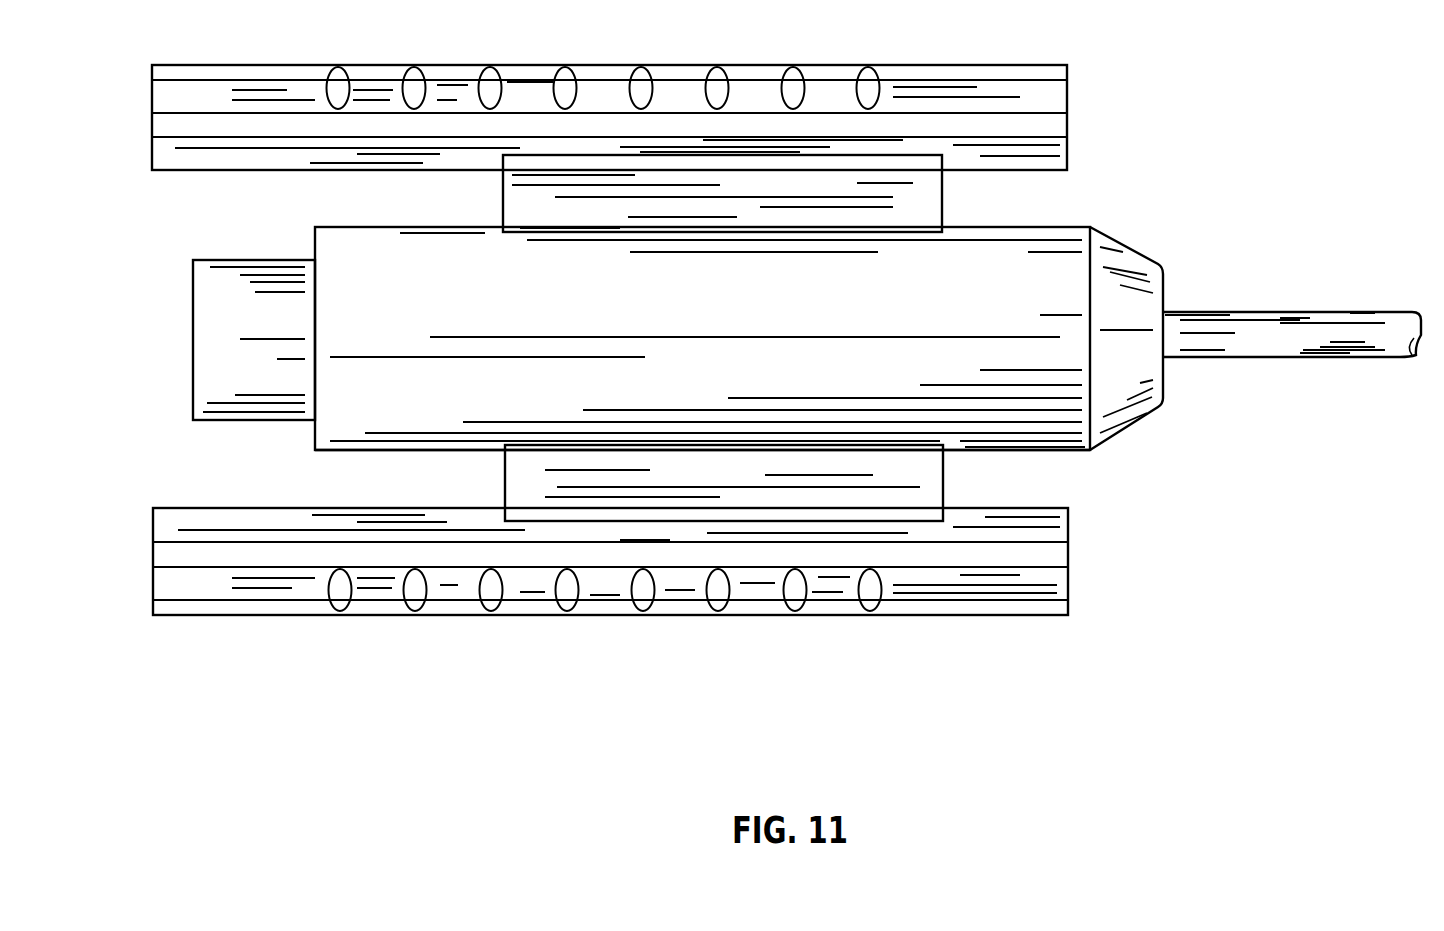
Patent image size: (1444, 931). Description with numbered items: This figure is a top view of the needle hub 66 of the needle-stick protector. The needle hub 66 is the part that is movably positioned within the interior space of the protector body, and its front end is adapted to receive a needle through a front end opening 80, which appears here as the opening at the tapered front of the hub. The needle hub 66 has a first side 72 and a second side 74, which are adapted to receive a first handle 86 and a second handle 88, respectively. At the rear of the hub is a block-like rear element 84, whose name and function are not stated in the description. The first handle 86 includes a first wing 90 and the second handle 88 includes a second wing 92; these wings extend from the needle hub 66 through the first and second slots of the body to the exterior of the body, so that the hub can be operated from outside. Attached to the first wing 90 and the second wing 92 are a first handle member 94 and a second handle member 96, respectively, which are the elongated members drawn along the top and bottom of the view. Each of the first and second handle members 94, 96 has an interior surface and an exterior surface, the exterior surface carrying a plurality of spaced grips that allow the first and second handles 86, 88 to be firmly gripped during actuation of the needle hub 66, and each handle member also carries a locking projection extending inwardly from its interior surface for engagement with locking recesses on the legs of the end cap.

The needle hub 66 is at (1128, 245).
The first side 72 is at (1058, 222).
The second side 74 is at (1012, 450).
The front end opening 80 is at (1165, 292).
The end block 84 is at (210, 333).
The first handle 86 is at (677, 64).
The second handle 88 is at (608, 617).
The first wing 90 is at (788, 167).
The second wing 92 is at (872, 500).
The first handle member 94 is at (1055, 64).
The second handle member 96 is at (1075, 613).